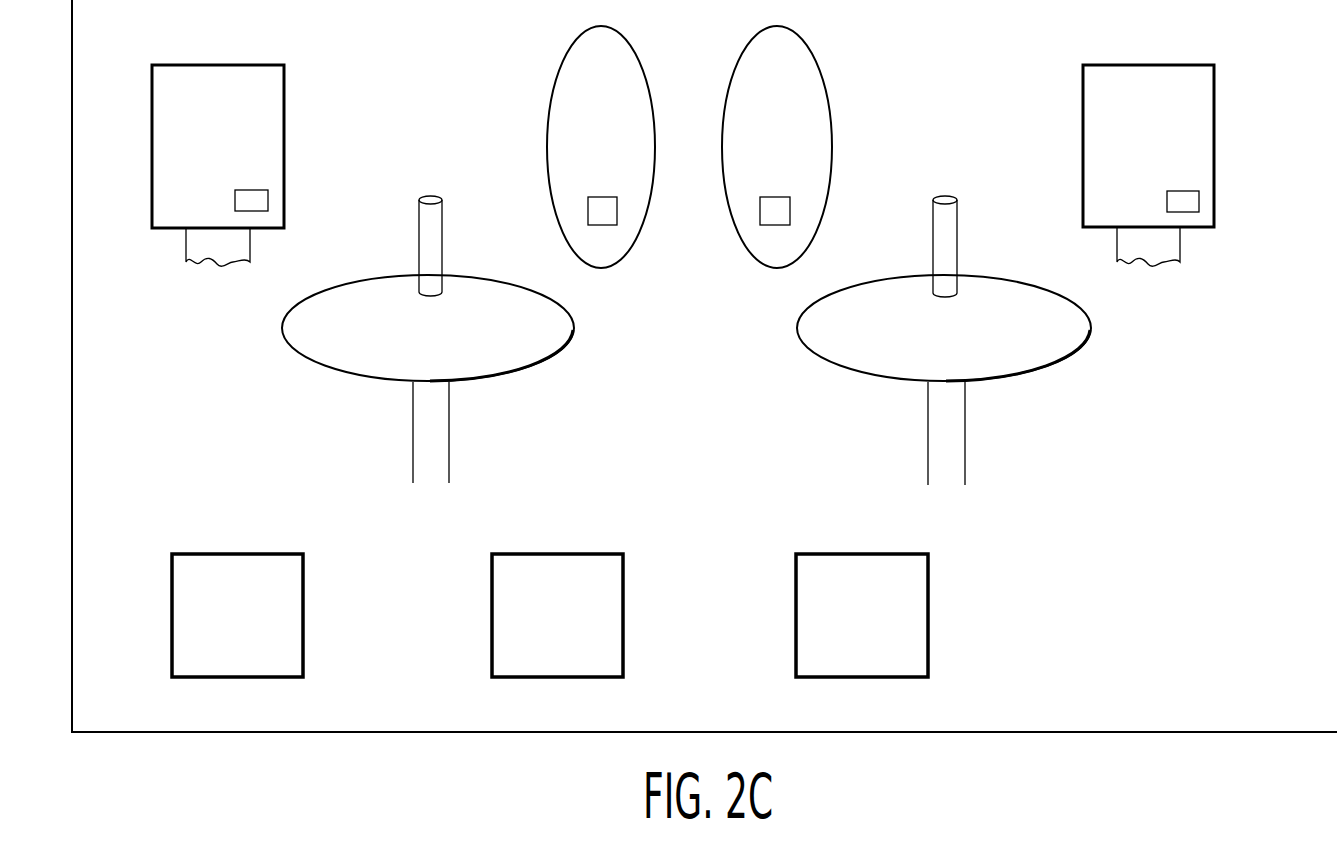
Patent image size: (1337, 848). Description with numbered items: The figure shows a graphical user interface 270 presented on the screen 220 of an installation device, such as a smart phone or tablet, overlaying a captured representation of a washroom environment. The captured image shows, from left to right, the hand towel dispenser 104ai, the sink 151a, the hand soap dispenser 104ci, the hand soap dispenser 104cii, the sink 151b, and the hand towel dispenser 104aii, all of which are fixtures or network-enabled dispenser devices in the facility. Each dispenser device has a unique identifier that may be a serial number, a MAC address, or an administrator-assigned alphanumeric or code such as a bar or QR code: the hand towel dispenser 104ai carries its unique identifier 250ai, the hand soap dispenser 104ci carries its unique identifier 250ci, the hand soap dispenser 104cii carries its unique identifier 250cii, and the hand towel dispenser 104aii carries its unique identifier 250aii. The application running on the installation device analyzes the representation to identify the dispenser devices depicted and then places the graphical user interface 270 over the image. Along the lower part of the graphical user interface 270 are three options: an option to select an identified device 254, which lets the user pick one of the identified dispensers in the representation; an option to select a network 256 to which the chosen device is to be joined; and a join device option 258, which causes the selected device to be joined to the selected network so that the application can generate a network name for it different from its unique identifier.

The hand towel dispenser 104ai is at (240, 161).
The hand towel dispenser 104aii is at (1170, 162).
The hand soap dispenser 104ci is at (628, 160).
The hand soap dispenser 104cii is at (803, 160).
The unique identifier 250ai is at (258, 200).
The unique identifier 250aii is at (1188, 202).
The unique identifier 250ci is at (604, 215).
The unique identifier 250cii is at (773, 215).
The sink 151a is at (454, 342).
The sink 151b is at (967, 342).
The select identified device option 254 is at (303, 602).
The select network option 256 is at (623, 600).
The join device option 258 is at (928, 603).
The graphical user interface 270 is at (1238, 520).
The screen 220 is at (1192, 732).